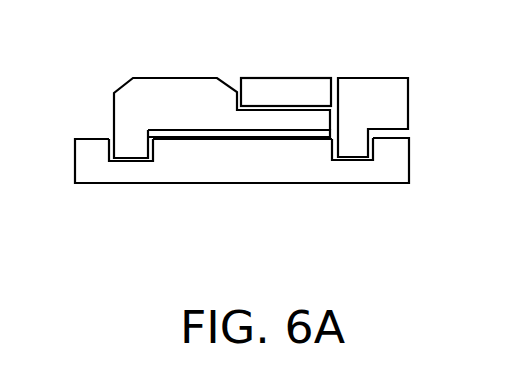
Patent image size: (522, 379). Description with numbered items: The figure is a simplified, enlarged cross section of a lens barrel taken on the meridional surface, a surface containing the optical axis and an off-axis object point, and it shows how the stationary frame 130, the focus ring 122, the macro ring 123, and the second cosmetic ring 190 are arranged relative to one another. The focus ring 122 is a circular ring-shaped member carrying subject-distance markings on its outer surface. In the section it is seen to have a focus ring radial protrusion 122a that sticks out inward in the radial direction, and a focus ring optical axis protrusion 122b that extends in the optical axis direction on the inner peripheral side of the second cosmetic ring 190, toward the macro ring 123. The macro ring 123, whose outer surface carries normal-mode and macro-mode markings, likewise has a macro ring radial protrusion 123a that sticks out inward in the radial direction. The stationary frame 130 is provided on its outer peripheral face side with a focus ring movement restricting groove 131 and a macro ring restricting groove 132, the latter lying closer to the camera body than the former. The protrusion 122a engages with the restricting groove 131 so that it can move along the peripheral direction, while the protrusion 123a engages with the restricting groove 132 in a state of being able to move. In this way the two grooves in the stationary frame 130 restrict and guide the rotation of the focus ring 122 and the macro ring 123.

The focus ring 122 is at (147, 112).
The focus ring radial protrusion 122a is at (130, 152).
The focus ring optical axis protrusion 122b is at (289, 120).
The macro ring 123 is at (387, 93).
The macro ring radial protrusion 123a is at (348, 152).
The stationary frame 130 is at (88, 178).
The focus ring movement restricting groove 131 is at (132, 163).
The macro ring restricting groove 132 is at (360, 162).
The second cosmetic ring 190 is at (288, 87).